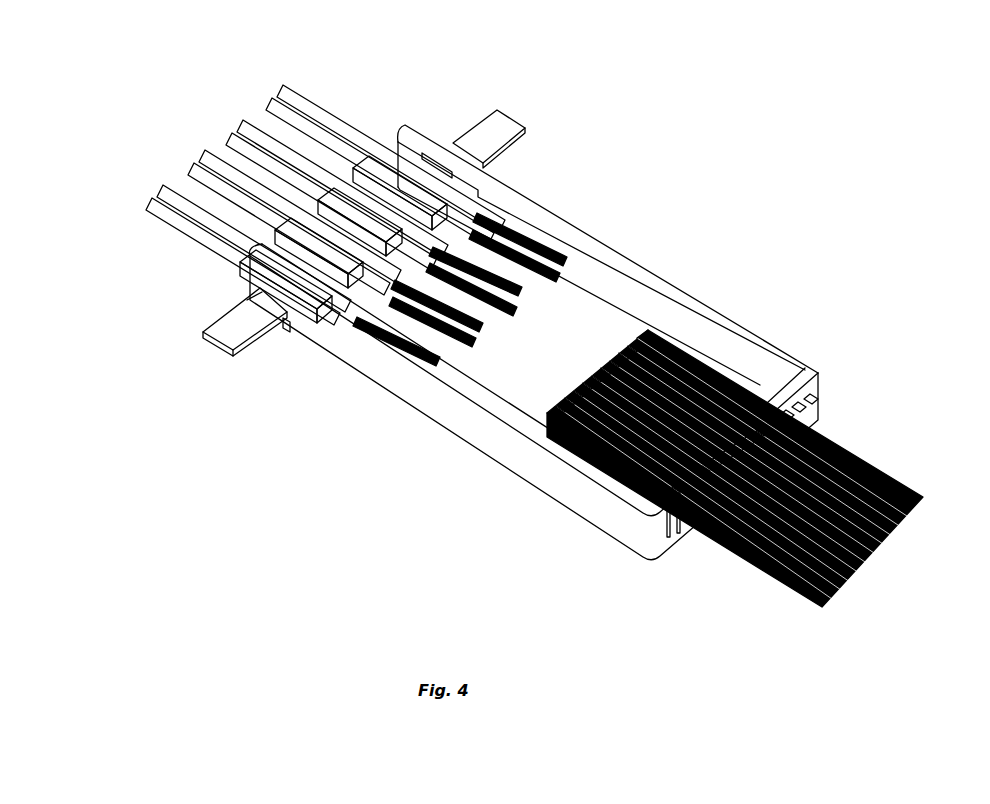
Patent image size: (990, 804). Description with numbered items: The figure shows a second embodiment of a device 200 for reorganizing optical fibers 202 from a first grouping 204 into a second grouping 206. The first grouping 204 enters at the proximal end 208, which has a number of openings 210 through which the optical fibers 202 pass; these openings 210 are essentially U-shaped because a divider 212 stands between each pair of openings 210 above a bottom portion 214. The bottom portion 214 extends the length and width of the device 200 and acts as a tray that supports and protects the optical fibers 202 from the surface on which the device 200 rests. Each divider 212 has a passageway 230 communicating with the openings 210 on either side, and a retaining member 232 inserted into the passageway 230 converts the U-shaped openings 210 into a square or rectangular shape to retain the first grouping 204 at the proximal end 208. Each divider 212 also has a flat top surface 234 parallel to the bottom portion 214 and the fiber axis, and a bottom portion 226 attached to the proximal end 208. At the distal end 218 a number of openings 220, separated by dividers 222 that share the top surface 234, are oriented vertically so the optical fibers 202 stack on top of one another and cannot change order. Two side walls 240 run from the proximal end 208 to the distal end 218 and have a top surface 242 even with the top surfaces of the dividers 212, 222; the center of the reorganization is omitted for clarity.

The device for reorganizing optical fibers 200 is at (620, 118).
The optical fibers 202 is at (560, 270).
The first grouping of optical fibers 204 is at (313, 80).
The second grouping of optical fibers 206 is at (925, 500).
The proximal end 208 is at (240, 292).
The openings 210 is at (335, 300).
The divider 212 is at (372, 165).
The bottom portion 214 is at (545, 379).
The distal end 218 is at (655, 525).
The openings 220 is at (680, 520).
The dividers 222 is at (810, 378).
The bottom portion 226 is at (520, 290).
The passageway 230 is at (280, 335).
The retaining member 232 is at (210, 345).
The top surface 234 is at (290, 232).
The side walls 240 is at (445, 455).
The top surface 242 is at (410, 372).